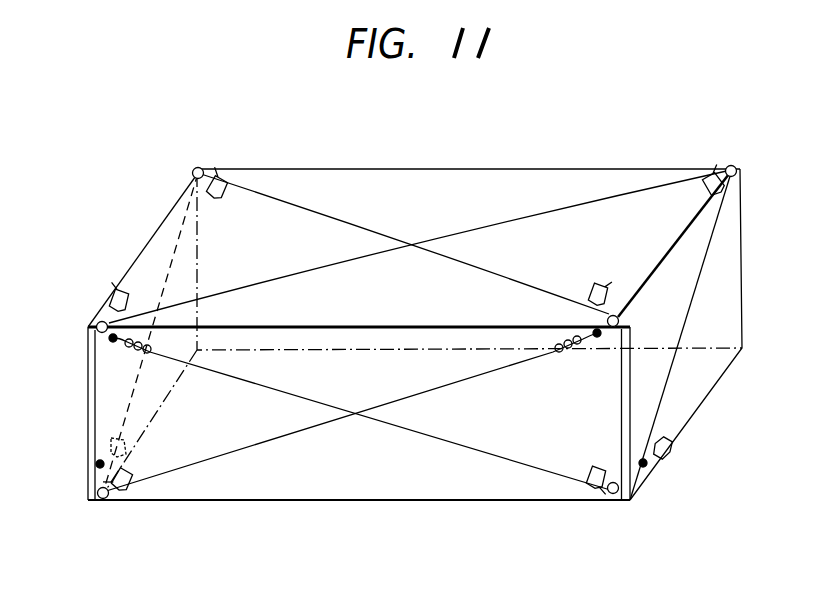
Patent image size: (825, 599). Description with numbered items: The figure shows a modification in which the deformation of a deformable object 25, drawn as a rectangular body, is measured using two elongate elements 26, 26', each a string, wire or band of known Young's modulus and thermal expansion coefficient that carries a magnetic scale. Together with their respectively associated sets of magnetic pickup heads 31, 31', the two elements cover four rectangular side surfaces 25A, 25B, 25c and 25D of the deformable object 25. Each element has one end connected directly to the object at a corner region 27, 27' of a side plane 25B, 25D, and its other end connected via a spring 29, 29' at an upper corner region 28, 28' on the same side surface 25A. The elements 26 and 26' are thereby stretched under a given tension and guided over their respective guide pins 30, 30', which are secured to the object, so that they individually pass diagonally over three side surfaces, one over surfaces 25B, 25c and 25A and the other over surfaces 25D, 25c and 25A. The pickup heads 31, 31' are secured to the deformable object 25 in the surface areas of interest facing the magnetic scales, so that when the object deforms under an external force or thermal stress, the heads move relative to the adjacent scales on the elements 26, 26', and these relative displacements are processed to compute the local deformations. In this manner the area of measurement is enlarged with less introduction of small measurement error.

The deformable object 25 is at (425, 180).
The side surface 25A is at (343, 479).
The side surface 25B is at (150, 270).
The side surface 25c is at (474, 209).
The side surface 25D is at (740, 236).
The elongate element 26 is at (403, 226).
The elongate element 26' is at (420, 230).
The corner region 27 is at (74, 467).
The corner region 27' is at (680, 344).
The upper corner region 28 is at (79, 349).
The upper corner region 28' is at (597, 369).
The spring 29 is at (332, 415).
The spring 29' is at (350, 412).
The guide pins 30 is at (425, 335).
The guide pins 30' is at (405, 330).
The magnetic pickup heads 31 is at (342, 304).
The magnetic pickup heads 31' is at (406, 330).